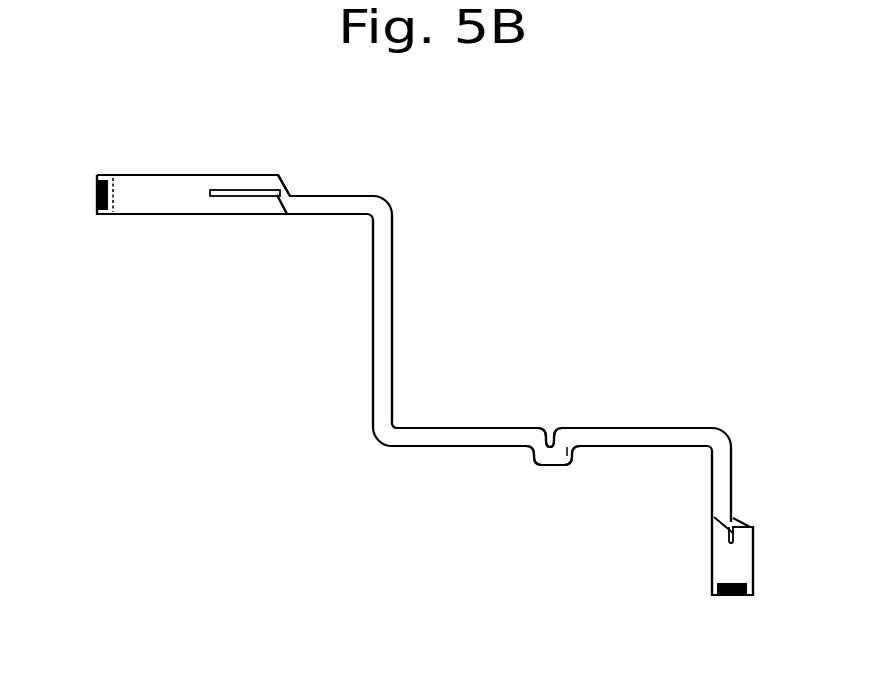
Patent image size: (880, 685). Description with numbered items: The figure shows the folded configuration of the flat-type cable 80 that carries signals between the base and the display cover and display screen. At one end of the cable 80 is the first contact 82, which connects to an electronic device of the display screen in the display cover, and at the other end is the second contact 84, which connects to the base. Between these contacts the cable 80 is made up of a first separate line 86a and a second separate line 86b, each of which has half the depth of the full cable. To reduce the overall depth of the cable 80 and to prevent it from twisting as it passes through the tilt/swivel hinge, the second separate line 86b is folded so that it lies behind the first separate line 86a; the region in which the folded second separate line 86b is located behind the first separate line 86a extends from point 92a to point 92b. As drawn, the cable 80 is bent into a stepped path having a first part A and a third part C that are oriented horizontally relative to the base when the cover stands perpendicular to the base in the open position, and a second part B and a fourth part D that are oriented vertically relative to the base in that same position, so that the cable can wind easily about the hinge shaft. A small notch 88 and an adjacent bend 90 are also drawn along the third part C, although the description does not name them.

The cable 80 is at (470, 141).
The first contact 82 is at (97, 194).
The second contact 84 is at (735, 598).
The first separate line 86a is at (255, 208).
The second separate line 86b is at (248, 181).
The bent notch portion 88 is at (552, 458).
The bend line 90 is at (569, 448).
The point 92a is at (285, 190).
The point 92b is at (752, 526).
The first part A is at (201, 216).
The second part B is at (392, 321).
The third part C is at (457, 447).
The fourth part D is at (753, 565).